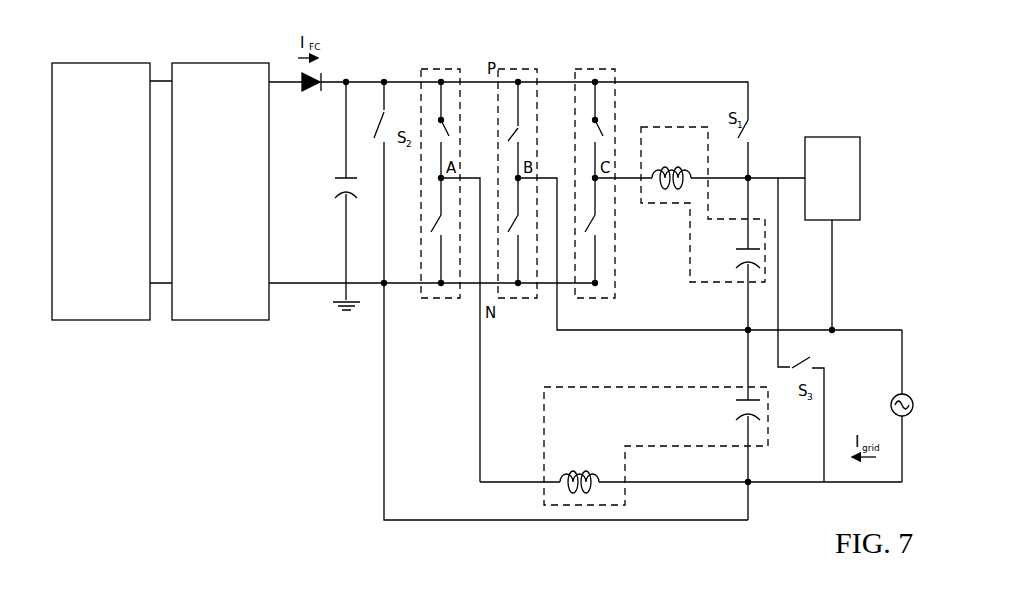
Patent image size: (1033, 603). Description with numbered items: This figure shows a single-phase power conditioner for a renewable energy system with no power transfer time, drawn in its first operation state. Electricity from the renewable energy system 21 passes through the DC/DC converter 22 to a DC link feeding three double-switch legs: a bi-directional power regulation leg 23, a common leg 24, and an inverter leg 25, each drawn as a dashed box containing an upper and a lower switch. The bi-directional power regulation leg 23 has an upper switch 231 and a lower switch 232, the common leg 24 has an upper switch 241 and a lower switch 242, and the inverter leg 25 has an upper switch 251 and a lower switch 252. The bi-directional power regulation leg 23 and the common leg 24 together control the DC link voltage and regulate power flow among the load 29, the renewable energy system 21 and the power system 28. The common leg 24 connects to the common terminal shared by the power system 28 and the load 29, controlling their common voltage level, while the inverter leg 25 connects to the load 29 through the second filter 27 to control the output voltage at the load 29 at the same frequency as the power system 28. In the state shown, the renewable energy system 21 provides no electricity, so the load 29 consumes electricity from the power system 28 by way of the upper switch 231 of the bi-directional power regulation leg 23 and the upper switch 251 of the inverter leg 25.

The renewable energy system 21 is at (98, 320).
The DC/DC converter 22 is at (218, 320).
The bi-directional power regulation leg 23 is at (421, 154).
The upper switch of the bi-directional power regulation leg 231 is at (449, 133).
The lower switch of first switch module 232 is at (437, 224).
The common leg 24 is at (506, 179).
The upper switch of second switch module 241 is at (513, 130).
The lower switch of second switch module 242 is at (515, 232).
The inverter leg 25 is at (609, 155).
The upper switch of the inverter leg 251 is at (603, 133).
The lower switch of third switch module 252 is at (598, 228).
The second filter 27 is at (720, 284).
The power system 28 is at (910, 394).
The load 29 is at (830, 137).